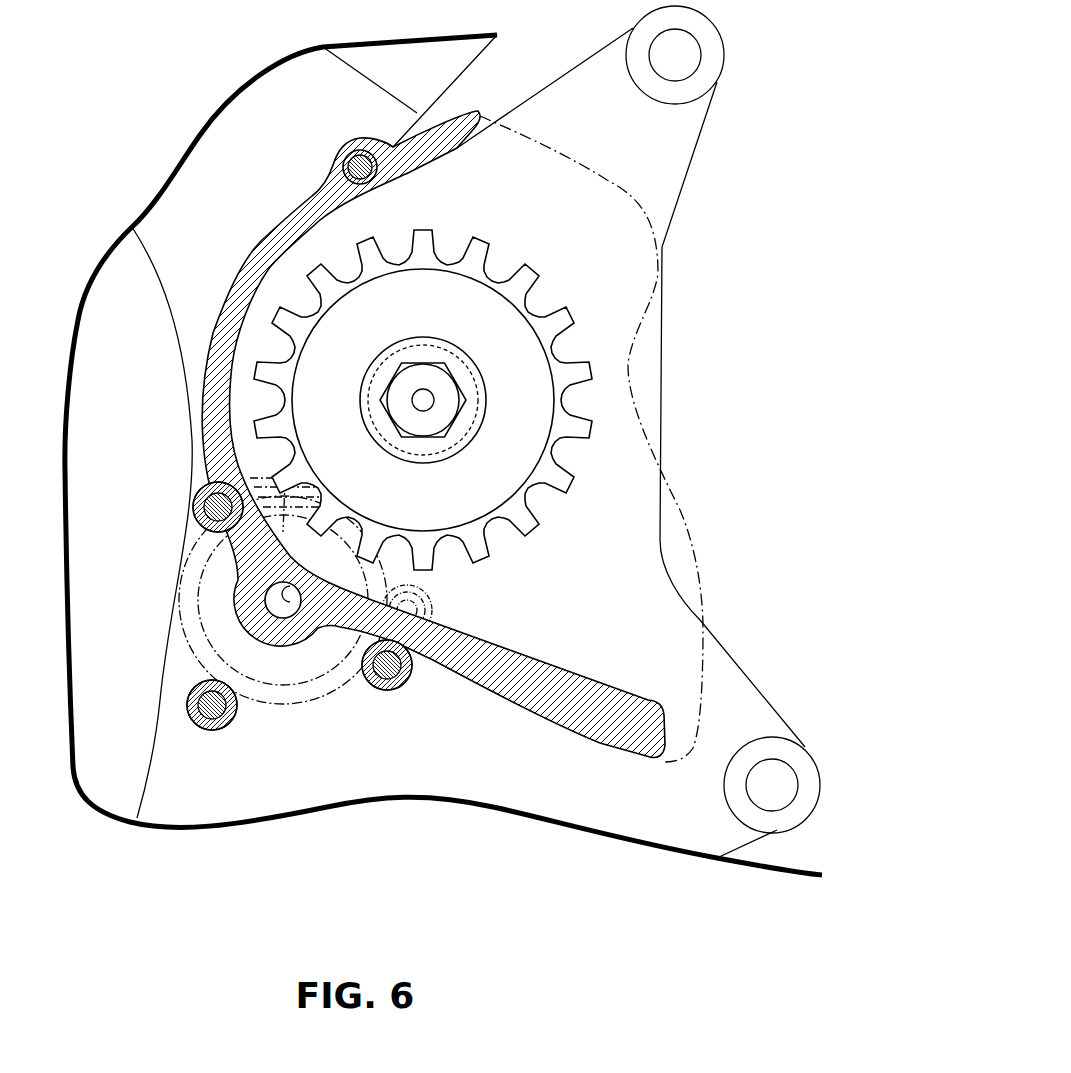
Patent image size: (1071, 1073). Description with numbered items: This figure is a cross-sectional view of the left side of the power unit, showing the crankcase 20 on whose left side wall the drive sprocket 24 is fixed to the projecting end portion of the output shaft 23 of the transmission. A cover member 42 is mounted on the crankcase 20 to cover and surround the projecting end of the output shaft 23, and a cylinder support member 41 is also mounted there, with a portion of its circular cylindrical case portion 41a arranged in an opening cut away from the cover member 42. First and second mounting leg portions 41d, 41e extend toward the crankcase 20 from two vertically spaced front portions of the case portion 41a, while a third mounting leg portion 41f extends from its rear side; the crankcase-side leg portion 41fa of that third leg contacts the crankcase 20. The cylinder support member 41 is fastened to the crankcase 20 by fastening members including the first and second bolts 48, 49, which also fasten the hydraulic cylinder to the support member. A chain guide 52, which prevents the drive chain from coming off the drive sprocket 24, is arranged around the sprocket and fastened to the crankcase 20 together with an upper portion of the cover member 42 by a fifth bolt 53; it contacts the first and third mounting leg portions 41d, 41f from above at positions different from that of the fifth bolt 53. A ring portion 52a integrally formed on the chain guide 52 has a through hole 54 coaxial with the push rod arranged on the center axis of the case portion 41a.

The crankcase 20 is at (578, 826).
The output shaft 23 is at (418, 343).
The drive sprocket 24 is at (529, 274).
The cylinder support member 41 is at (307, 710).
The case portion 41a is at (180, 619).
The first mounting leg portion 41d is at (206, 499).
The second mounting leg portion 41e is at (192, 709).
The third mounting leg portion 41f is at (388, 696).
The crankcase-side leg portion 41fa is at (405, 683).
The cover member 42 is at (686, 511).
The first bolt 48 is at (203, 513).
The second bolt 49 is at (216, 720).
The chain guide 52 is at (617, 705).
The ring portion 52a is at (258, 627).
The fifth bolt 53 is at (345, 162).
The through hole 54 is at (383, 588).